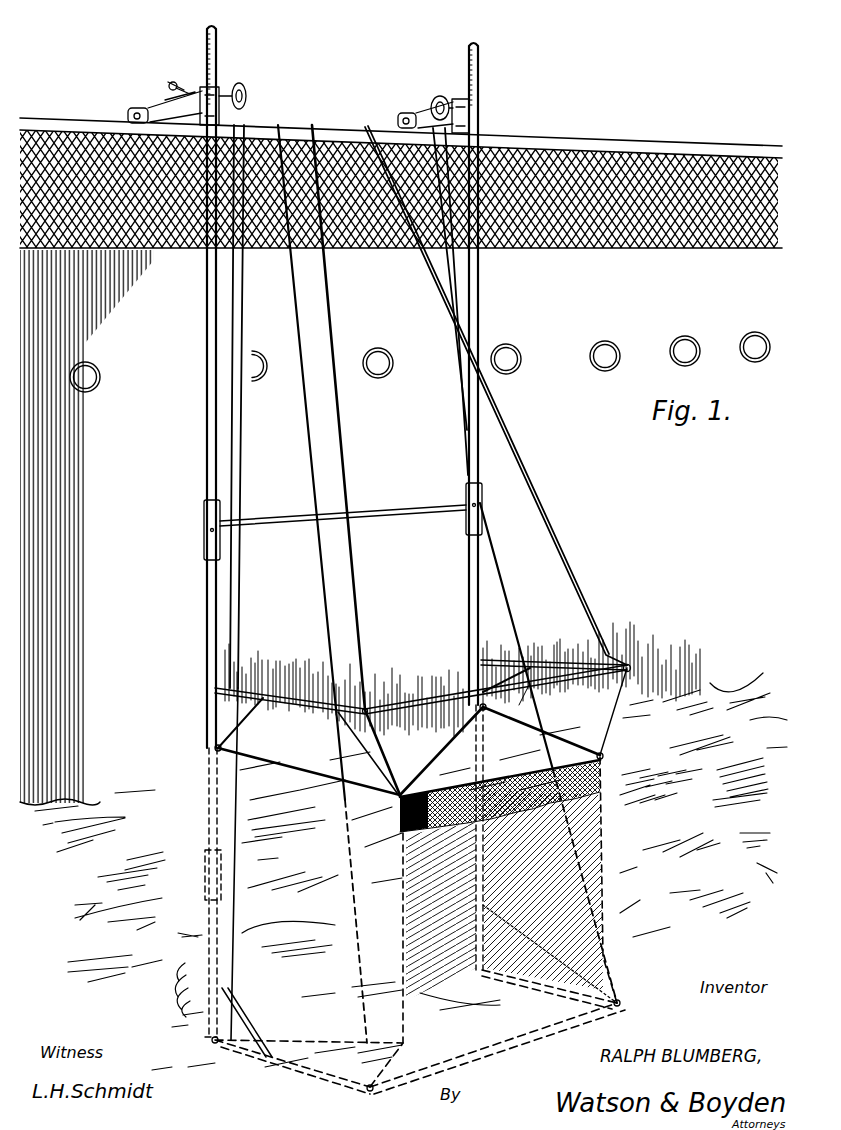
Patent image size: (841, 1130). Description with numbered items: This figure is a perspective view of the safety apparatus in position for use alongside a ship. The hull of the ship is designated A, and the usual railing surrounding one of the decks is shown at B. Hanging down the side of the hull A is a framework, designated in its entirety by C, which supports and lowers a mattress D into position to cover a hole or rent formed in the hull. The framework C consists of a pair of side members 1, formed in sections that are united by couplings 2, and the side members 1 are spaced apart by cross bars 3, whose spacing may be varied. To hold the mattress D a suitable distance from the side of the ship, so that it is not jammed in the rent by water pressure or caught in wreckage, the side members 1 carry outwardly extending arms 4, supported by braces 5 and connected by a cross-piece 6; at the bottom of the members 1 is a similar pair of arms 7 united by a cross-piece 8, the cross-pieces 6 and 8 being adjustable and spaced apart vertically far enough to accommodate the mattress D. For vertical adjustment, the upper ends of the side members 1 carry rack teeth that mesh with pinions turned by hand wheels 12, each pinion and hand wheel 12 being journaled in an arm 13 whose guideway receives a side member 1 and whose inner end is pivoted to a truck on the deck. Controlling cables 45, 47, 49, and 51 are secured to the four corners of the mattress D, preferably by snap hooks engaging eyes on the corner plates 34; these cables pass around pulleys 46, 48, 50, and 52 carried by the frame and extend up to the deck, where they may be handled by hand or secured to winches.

The side members 1 is at (205, 300).
The couplings 2 is at (204, 538).
The cross bars 3 is at (393, 508).
The outwardly extending arms 4 is at (421, 672).
The braces 5 is at (233, 718).
The cross-piece 6 is at (440, 694).
The arms 7 is at (306, 1076).
The cross-piece 8 is at (531, 1050).
The hand wheel 12 is at (246, 93).
The arm 13 is at (165, 105).
The corner plates 34 is at (603, 757).
The controlling cable 45 is at (555, 521).
The pulley 46 is at (632, 668).
The controlling cable 47 is at (236, 296).
The pulley 48 is at (216, 748).
The controlling cable 49 is at (306, 431).
The pulley 50 is at (363, 1092).
The controlling cable 51 is at (247, 331).
The pulley 52 is at (213, 1040).
The hull A is at (395, 527).
The railing B is at (577, 142).
The framework C is at (521, 662).
The mattress D is at (500, 797).